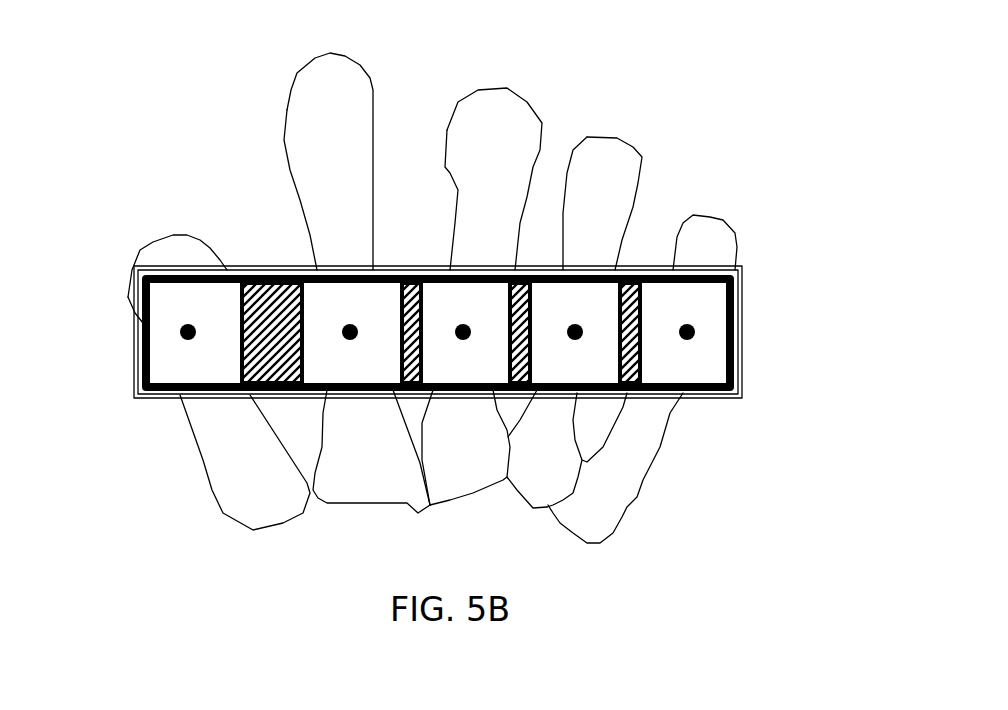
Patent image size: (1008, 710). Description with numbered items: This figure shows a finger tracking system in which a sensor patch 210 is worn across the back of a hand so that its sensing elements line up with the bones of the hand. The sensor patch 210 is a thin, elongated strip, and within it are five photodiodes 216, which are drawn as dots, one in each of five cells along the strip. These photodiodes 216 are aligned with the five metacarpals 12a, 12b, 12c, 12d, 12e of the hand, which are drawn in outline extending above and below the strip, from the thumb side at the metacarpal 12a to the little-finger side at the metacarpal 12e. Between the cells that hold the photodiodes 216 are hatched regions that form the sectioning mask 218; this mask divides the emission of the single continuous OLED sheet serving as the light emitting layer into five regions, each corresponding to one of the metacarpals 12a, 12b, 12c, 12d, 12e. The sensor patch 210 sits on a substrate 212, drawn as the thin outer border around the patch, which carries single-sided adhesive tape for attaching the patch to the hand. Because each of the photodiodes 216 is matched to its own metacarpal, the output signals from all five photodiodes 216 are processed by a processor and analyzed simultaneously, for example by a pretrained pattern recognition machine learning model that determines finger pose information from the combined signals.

The metacarpal 12a is at (132, 287).
The metacarpal 12b is at (302, 105).
The metacarpal 12c is at (468, 112).
The metacarpal 12d is at (610, 150).
The metacarpal 12e is at (725, 247).
The sensor patch 210 is at (717, 327).
The substrate 212 is at (742, 372).
The photodiodes 216 is at (687, 338).
The sectioning mask 218 is at (275, 272).